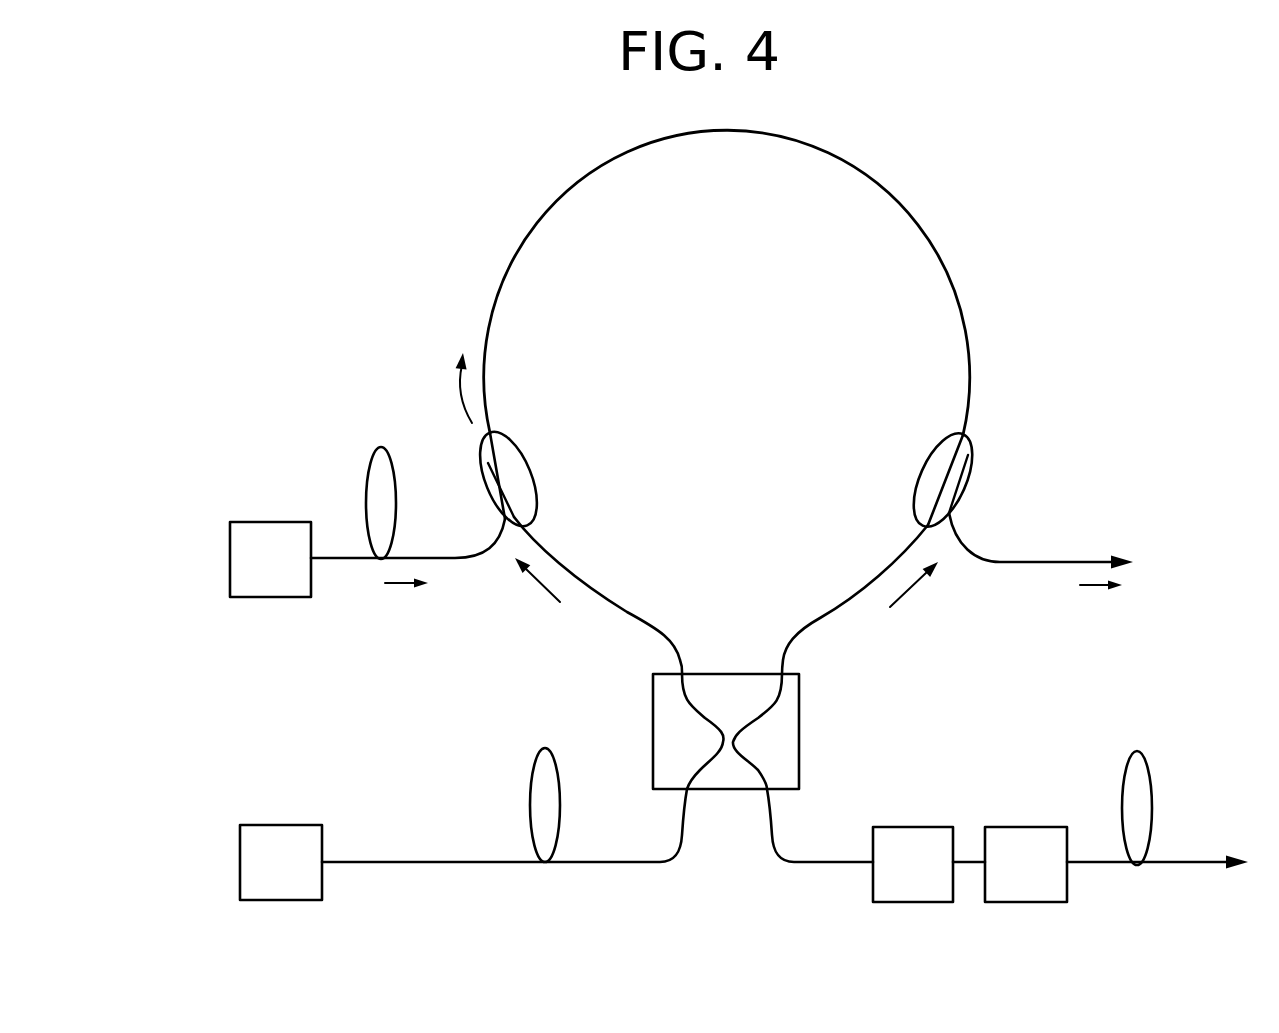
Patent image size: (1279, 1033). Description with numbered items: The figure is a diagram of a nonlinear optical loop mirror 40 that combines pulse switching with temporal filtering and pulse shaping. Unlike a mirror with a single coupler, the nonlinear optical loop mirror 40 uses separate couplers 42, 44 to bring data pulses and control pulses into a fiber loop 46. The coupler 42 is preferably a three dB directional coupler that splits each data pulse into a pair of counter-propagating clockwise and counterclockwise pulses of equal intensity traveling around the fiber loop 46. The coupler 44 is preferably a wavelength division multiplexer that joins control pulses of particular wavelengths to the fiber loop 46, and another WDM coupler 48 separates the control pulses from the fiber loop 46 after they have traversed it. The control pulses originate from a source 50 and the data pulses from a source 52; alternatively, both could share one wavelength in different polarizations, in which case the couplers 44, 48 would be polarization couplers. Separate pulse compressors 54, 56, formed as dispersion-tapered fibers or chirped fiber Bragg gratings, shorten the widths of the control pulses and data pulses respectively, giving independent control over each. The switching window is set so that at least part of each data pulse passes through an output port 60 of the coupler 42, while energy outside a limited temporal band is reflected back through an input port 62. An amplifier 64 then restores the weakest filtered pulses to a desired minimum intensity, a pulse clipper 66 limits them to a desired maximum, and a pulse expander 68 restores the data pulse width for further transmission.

The nonlinear optical loop mirror 40 is at (418, 249).
The coupler 42 is at (782, 713).
The coupler 44 is at (533, 479).
The fiber loop 46 is at (669, 151).
The WDM coupler 48 is at (926, 470).
The source 50 is at (248, 556).
The source 52 is at (290, 843).
The pulse compressor 54 is at (366, 468).
The pulse compressor 56 is at (531, 790).
The output port 60 is at (765, 790).
The input port 62 is at (678, 790).
The amplifier 64 is at (915, 835).
The pulse clipper 66 is at (1035, 835).
The pulse expander 68 is at (1152, 785).